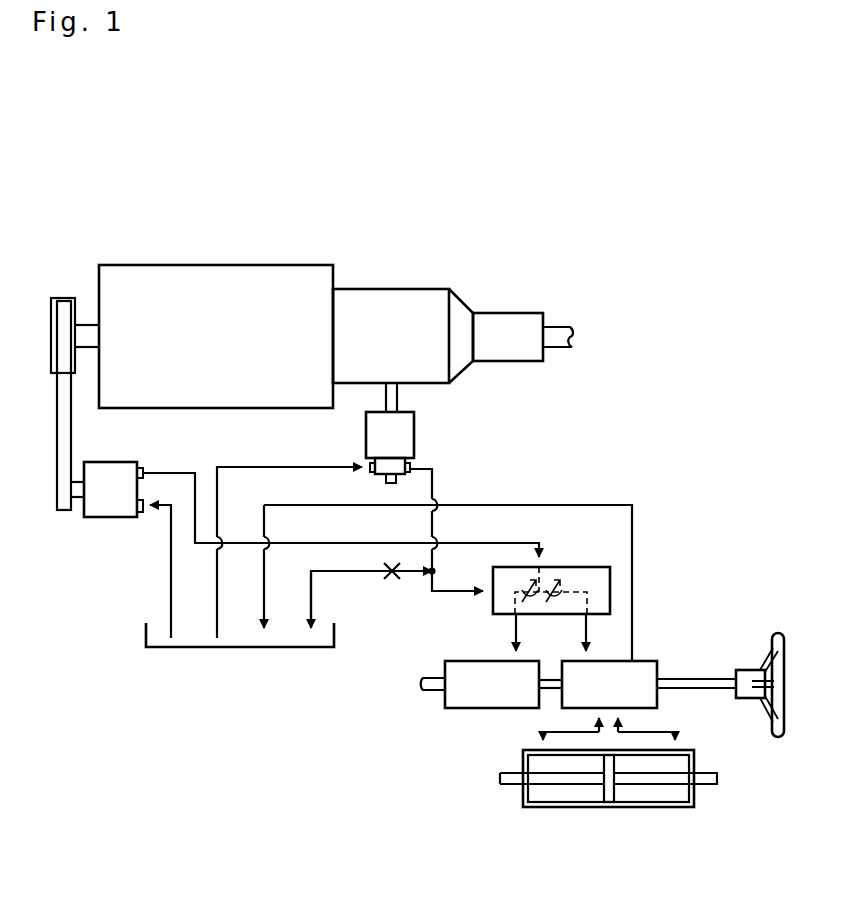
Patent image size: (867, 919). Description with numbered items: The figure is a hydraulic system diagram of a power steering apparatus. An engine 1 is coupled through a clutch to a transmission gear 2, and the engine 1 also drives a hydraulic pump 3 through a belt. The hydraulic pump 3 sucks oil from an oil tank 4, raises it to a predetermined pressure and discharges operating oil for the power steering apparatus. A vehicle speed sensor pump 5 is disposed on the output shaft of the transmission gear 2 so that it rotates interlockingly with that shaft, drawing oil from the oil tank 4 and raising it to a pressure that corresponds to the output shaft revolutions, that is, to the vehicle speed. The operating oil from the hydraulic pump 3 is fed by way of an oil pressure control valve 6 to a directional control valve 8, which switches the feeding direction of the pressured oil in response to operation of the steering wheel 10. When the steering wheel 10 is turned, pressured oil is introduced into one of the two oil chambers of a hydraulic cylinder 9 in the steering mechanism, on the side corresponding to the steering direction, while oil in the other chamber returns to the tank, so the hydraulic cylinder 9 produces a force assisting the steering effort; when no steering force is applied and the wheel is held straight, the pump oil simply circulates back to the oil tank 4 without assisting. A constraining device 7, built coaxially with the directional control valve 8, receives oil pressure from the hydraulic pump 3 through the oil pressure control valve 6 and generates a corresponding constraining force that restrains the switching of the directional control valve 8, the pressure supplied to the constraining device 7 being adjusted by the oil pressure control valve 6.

The engine 1 is at (205, 265).
The transmission gear 2 is at (392, 289).
The hydraulic pump 3 is at (110, 517).
The oil tank 4 is at (231, 647).
The vehicle speed sensor pump 5 is at (414, 432).
The oil pressure control valve 6 is at (572, 566).
The constraining device 7 is at (495, 708).
The directional control valve 8 is at (650, 661).
The hydraulic cylinder 9 is at (600, 807).
The steering wheel 10 is at (757, 640).